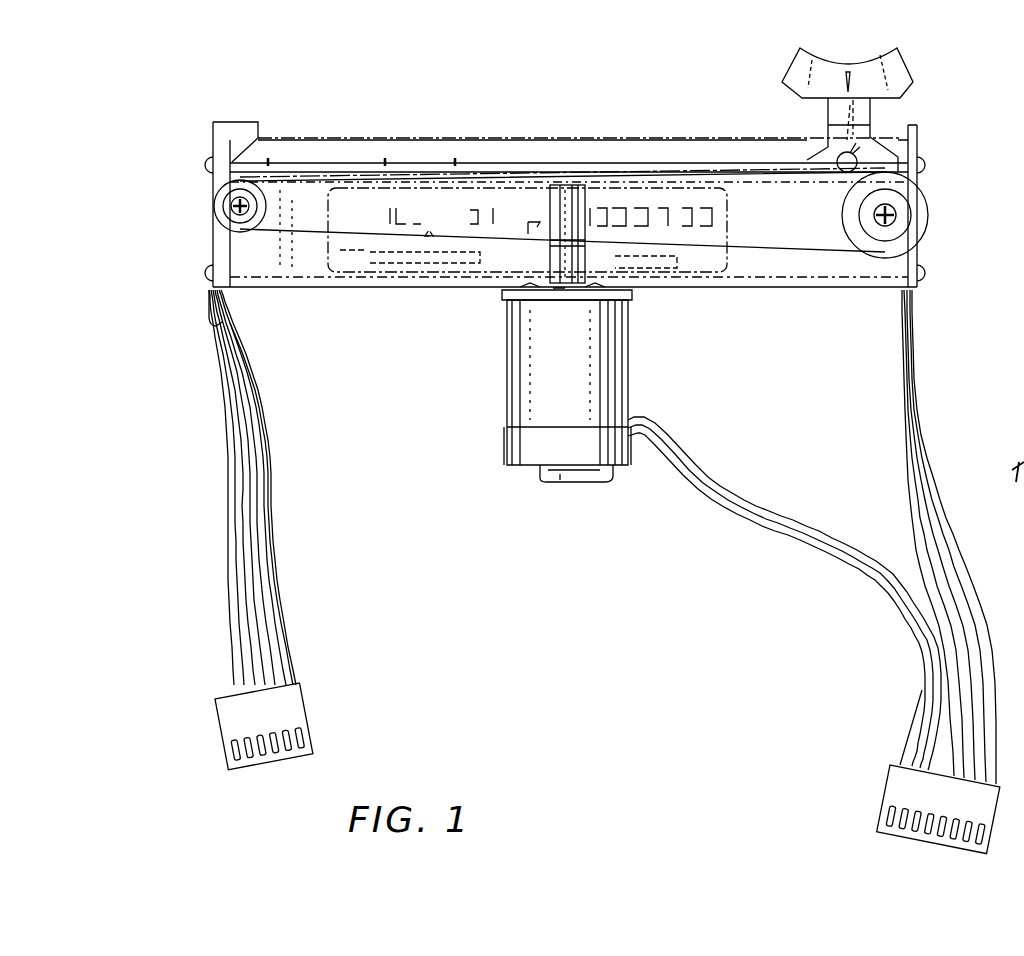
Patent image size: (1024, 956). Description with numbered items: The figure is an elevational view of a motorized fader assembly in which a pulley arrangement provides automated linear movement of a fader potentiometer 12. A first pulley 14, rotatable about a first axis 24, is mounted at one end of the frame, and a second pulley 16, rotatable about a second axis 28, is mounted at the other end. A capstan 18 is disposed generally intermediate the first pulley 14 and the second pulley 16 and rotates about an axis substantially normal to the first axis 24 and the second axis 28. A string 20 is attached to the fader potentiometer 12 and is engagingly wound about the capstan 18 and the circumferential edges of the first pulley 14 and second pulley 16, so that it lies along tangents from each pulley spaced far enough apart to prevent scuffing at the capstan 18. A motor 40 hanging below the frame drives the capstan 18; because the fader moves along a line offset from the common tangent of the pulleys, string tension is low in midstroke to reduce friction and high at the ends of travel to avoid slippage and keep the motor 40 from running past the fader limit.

The fader potentiometer 12 is at (872, 62).
The first pulley 14 is at (228, 214).
The second pulley 16 is at (920, 224).
The capstan 18 is at (573, 205).
The string 20 is at (742, 253).
The first axis 24 is at (252, 196).
The second axis 28 is at (896, 213).
The motor 40 is at (522, 442).